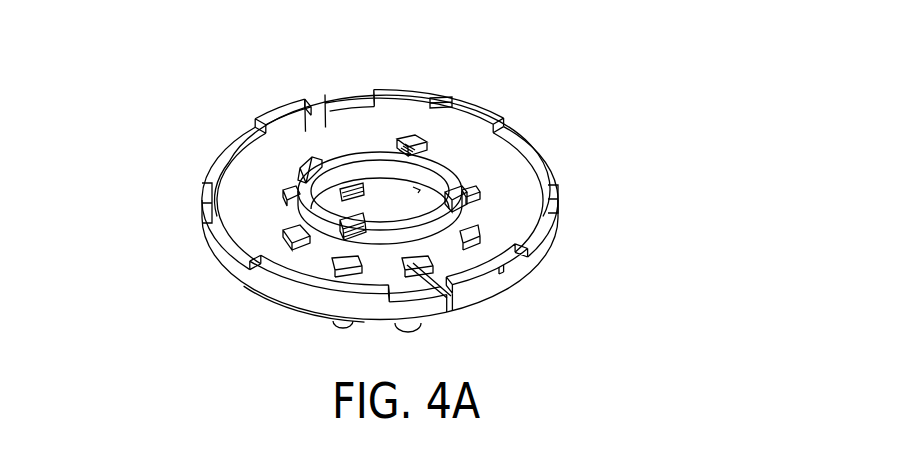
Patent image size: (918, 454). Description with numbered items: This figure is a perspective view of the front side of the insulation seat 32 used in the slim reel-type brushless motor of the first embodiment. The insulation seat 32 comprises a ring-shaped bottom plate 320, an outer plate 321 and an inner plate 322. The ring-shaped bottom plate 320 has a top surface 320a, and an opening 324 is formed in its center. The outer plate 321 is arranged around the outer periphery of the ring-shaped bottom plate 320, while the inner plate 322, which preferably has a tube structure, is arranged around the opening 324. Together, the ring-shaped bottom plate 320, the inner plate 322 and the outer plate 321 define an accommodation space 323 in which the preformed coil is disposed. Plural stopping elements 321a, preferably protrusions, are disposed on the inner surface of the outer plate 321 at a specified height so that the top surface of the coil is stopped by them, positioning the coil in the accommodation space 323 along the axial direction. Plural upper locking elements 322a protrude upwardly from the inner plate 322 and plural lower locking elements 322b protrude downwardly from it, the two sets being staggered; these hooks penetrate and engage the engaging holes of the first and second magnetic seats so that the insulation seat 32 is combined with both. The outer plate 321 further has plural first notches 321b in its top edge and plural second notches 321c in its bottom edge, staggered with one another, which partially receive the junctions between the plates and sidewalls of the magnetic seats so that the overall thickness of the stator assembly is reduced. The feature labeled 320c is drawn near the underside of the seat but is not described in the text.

The insulation seat 32 is at (764, 46).
The ring-shaped bottom plate 320 is at (334, 147).
The top surface 320a is at (282, 152).
The positioning protrusion 320c is at (333, 323).
The outer plate 321 is at (242, 157).
The stopping elements 321a is at (445, 103).
The first notches 321b is at (207, 217).
The second notches 321c is at (268, 301).
The inner plate 322 is at (363, 169).
The upper locking elements 322a is at (412, 132).
The lower locking elements 322b is at (350, 196).
The accommodation space 323 is at (512, 221).
The opening 324 is at (385, 222).